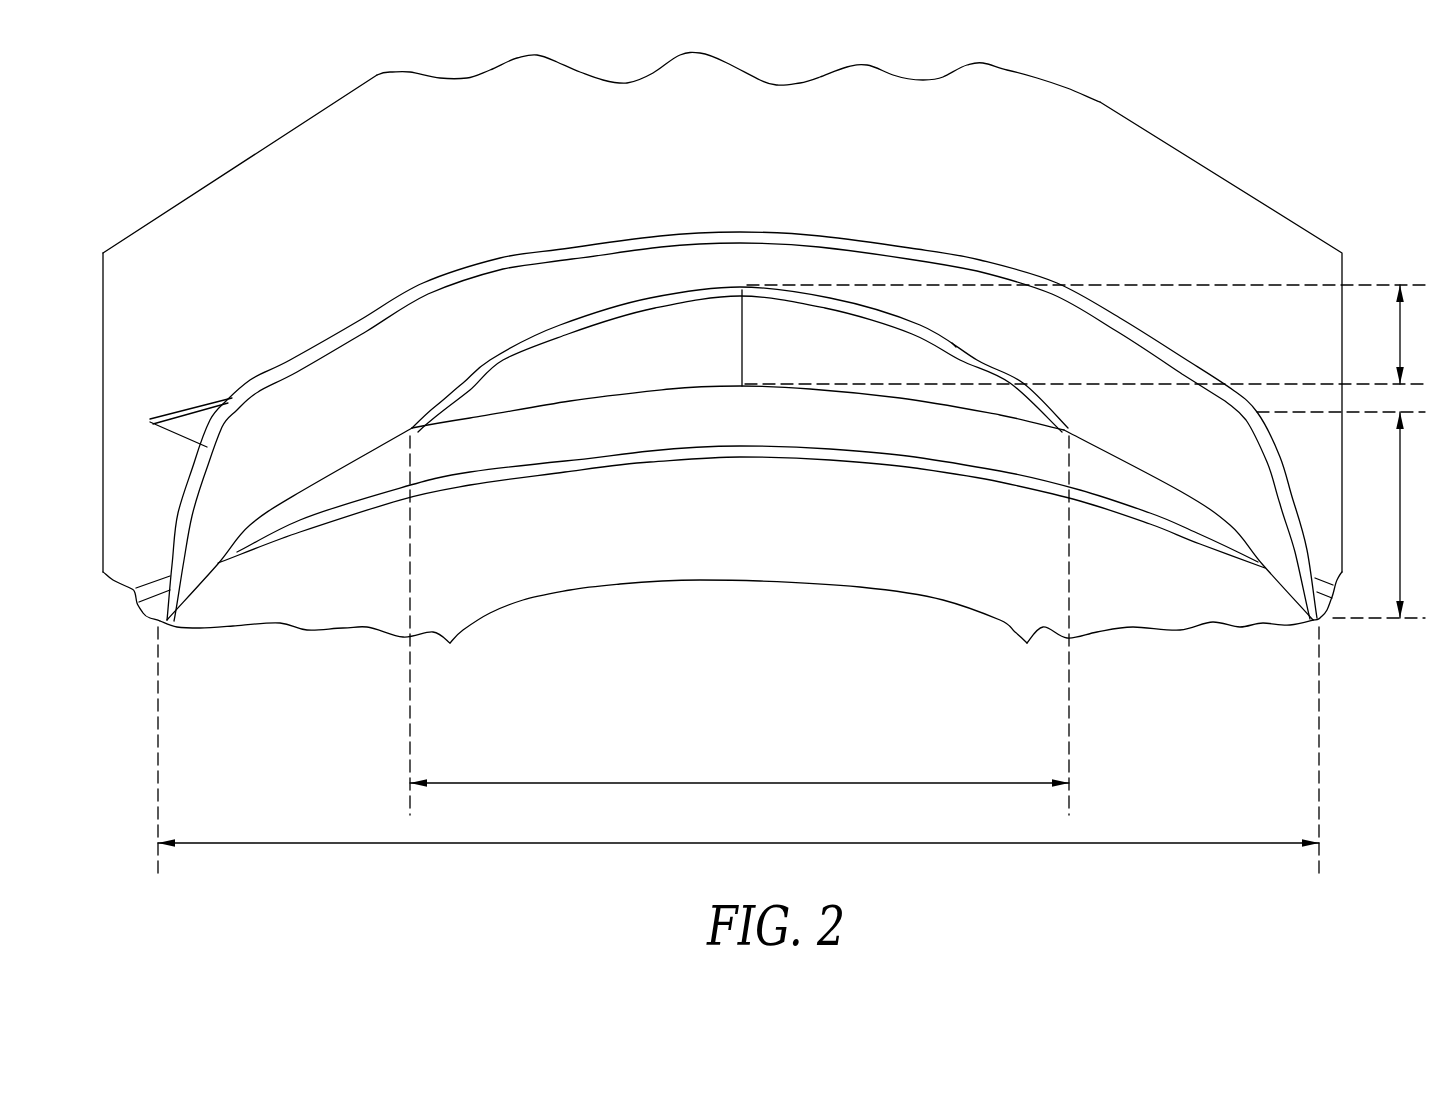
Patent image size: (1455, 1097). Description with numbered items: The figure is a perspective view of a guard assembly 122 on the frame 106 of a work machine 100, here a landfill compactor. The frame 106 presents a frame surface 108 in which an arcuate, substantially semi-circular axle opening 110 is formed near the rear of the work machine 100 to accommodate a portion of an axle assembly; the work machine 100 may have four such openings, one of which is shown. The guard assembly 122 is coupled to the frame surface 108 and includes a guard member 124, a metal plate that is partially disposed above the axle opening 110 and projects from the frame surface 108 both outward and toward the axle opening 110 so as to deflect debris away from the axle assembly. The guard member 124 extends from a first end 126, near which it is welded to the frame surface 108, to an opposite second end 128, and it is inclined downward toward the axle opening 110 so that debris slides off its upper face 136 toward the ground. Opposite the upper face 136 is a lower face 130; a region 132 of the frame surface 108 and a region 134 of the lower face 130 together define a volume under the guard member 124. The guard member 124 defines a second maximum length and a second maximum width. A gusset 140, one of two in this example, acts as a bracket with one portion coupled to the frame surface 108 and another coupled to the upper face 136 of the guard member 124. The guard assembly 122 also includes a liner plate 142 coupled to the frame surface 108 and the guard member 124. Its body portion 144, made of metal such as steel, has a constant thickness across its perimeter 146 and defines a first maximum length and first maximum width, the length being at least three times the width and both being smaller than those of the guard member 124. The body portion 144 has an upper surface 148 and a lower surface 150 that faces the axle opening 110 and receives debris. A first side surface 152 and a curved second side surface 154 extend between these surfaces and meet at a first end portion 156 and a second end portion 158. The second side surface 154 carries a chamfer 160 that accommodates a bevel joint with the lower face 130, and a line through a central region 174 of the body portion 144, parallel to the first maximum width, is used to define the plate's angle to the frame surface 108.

The work machine 100 is at (1233, 147).
The frame 106 is at (274, 625).
The frame surface 108 is at (483, 437).
The axle opening 110 is at (758, 617).
The guard assembly 122 is at (1165, 323).
The guard member 124 is at (1307, 505).
The first end 126 is at (1145, 482).
The second end 128 is at (567, 230).
The lower face 130 is at (1215, 498).
The region of the frame surface 132 is at (583, 412).
The region of the lower face 134 is at (390, 383).
The upper face 136 is at (1043, 291).
The gusset 140 is at (173, 422).
The liner plate 142 is at (482, 327).
The body portion 144 is at (683, 397).
The perimeter 146 is at (637, 393).
The upper surface 148 is at (722, 287).
The lower surface 150 is at (837, 360).
The first side surface 152 is at (953, 410).
The second side surface 154 is at (952, 343).
The first end portion 156 is at (1060, 437).
The second end portion 158 is at (417, 440).
The chamfer 160 is at (842, 303).
The central region 174 is at (752, 337).